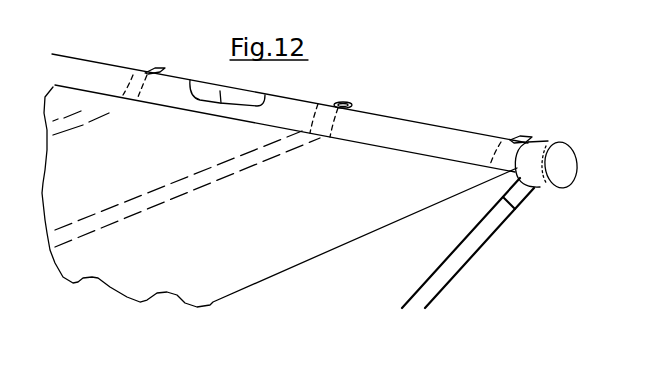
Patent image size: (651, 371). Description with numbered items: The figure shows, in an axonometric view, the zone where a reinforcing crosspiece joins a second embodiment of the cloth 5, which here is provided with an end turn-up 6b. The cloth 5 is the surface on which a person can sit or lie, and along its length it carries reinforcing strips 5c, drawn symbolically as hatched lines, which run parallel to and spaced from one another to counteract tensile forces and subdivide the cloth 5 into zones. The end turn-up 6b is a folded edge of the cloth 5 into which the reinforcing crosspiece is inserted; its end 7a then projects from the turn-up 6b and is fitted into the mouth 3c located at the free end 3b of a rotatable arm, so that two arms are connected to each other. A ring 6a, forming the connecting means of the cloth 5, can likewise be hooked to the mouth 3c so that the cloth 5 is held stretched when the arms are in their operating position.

The cloth 5 is at (244, 210).
The reinforcing strip 5c is at (177, 174).
The ring 6a is at (350, 98).
The end turn-up 6b is at (420, 118).
The mouth 3c is at (538, 140).
The end of reinforcing crosspiece 7a is at (566, 152).
The free end of rotatable arm 3b is at (477, 232).